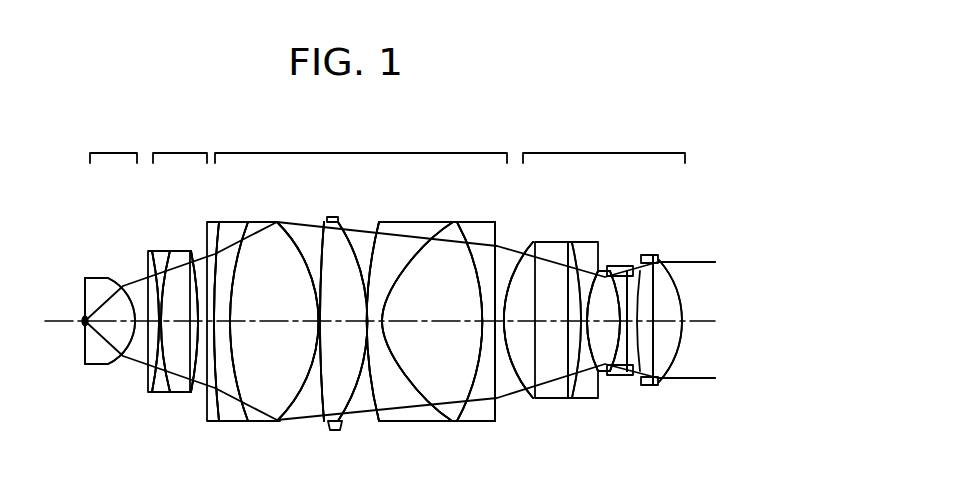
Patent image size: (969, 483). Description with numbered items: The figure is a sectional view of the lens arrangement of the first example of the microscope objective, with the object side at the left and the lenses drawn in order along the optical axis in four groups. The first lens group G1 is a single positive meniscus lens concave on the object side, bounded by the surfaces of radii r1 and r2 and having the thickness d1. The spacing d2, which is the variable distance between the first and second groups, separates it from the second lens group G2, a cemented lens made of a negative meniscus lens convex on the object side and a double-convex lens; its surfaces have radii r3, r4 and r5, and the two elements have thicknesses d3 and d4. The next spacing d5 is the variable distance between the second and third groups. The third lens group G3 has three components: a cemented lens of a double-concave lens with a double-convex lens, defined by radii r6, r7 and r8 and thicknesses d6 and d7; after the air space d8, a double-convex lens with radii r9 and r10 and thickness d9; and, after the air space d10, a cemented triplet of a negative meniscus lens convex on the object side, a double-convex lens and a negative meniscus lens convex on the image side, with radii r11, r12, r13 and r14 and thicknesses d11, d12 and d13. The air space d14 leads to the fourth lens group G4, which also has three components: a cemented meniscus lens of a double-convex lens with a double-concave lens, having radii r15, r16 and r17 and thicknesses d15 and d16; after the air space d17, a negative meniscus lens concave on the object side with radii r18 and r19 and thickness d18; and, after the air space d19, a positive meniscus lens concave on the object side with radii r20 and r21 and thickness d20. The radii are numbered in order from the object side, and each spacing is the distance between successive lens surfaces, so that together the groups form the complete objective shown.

The first lens group G1 is at (113, 141).
The second lens group G2 is at (180, 141).
The third lens group G3 is at (361, 141).
The fourth lens group G4 is at (604, 141).
The radius of curvature of first lens surface r1 is at (84, 318).
The radius of curvature of second lens surface r2 is at (122, 287).
The radius of curvature of third lens surface r3 is at (148, 267).
The radius of curvature of fourth lens surface r4 is at (167, 252).
The radius of curvature of fifth lens surface r5 is at (191, 252).
The radius of curvature of sixth lens surface r6 is at (214, 260).
The radius of curvature of seventh lens surface r7 is at (250, 223).
The radius of curvature of eighth lens surface r8 is at (287, 226).
The radius of curvature of ninth lens surface r9 is at (323, 222).
The radius of curvature of tenth lens surface r10 is at (343, 225).
The radius of curvature of eleventh lens surface r11 is at (380, 224).
The radius of curvature of twelfth lens surface r12 is at (440, 224).
The radius of curvature of thirteenth lens surface r13 is at (458, 222).
The radius of curvature of fourteenth lens surface r14 is at (493, 222).
The radius of curvature of fifteenth lens surface r15 is at (525, 250).
The radius of curvature of sixteenth lens surface r16 is at (572, 244).
The radius of curvature of seventeenth lens surface r17 is at (590, 272).
The radius of curvature of eighteenth lens surface r18 is at (619, 268).
The radius of curvature of nineteenth lens surface r19 is at (639, 269).
The radius of curvature of twentieth lens surface r20 is at (657, 262).
The radius of curvature of twenty-first lens surface r21 is at (675, 272).
The first lens surface spacing d1 is at (107, 321).
The second lens surface spacing d2 is at (120, 362).
The third lens surface spacing d3 is at (154, 394).
The fourth lens surface spacing d4 is at (179, 321).
The fifth lens surface spacing d5 is at (203, 394).
The sixth lens surface spacing d6 is at (230, 421).
The seventh lens surface spacing d7 is at (274, 321).
The eighth lens surface spacing d8 is at (300, 322).
The ninth lens surface spacing d9 is at (343, 321).
The tenth lens surface spacing d10 is at (358, 322).
The eleventh lens surface spacing d11 is at (391, 421).
The twelfth lens surface spacing d12 is at (432, 321).
The thirteenth lens surface spacing d13 is at (483, 421).
The fourteenth lens surface spacing d14 is at (508, 387).
The fifteenth lens surface spacing d15 is at (536, 320).
The sixteenth lens surface spacing d16 is at (578, 399).
The seventeenth lens surface spacing d17 is at (603, 321).
The eighteenth lens surface spacing d18 is at (623, 372).
The nineteenth lens surface spacing d19 is at (641, 373).
The twentieth lens surface spacing d20 is at (667, 321).